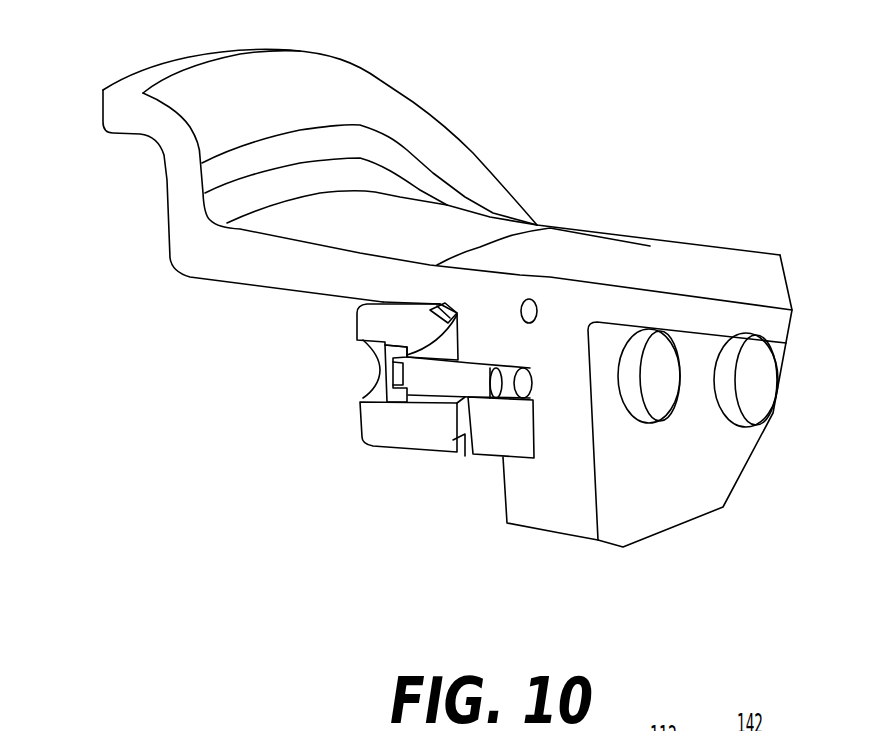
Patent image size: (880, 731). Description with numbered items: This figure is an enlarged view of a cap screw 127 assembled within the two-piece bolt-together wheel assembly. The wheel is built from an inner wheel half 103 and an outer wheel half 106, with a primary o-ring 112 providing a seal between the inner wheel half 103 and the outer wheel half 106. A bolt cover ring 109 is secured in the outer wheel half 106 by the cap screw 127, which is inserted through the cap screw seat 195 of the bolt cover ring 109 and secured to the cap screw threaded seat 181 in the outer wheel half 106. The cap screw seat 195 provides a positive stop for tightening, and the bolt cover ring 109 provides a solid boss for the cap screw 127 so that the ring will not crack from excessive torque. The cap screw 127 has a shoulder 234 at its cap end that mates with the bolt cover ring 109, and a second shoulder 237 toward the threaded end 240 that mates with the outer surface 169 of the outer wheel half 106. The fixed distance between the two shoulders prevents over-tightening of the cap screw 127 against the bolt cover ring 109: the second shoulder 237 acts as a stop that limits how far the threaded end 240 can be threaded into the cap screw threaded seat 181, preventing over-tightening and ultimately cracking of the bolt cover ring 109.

The inner wheel half 103 is at (523, 533).
The outer wheel half 106 is at (487, 469).
The bolt cover ring 109 is at (382, 450).
The primary o-ring 112 is at (540, 311).
The cap screw 127 is at (380, 369).
The outer surface 169 is at (457, 403).
The cap screw threaded seat 181 is at (527, 385).
The cap screw seat 195 is at (363, 396).
The shoulder 234 is at (440, 302).
The second shoulder 237 is at (458, 360).
The threaded end 240 is at (533, 392).